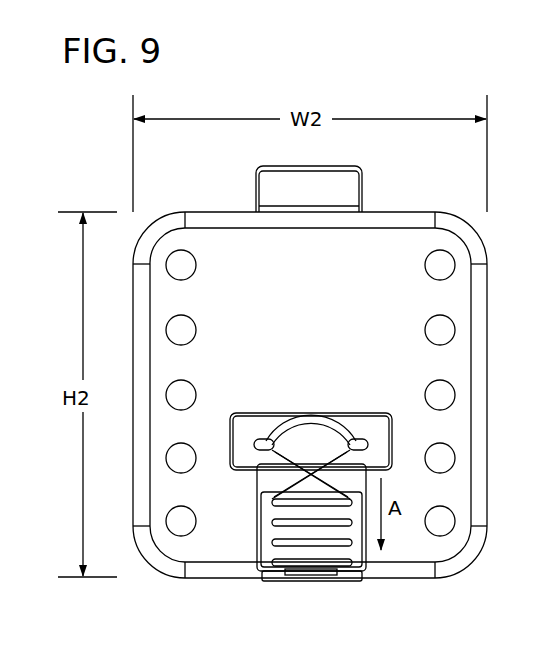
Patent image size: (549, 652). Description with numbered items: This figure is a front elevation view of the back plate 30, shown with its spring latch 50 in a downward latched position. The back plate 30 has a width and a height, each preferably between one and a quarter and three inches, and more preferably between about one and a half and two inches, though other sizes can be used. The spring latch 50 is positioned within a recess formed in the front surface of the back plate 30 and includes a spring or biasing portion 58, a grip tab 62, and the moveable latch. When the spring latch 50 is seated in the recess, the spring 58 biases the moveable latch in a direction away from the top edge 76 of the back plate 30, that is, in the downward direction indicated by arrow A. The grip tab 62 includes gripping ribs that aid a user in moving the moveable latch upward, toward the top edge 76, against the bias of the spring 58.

The back plate 30 is at (100, 166).
The top edge 76 is at (392, 211).
The spring latch 50 is at (253, 536).
The spring 58 is at (335, 421).
The grip tab 62 is at (272, 507).